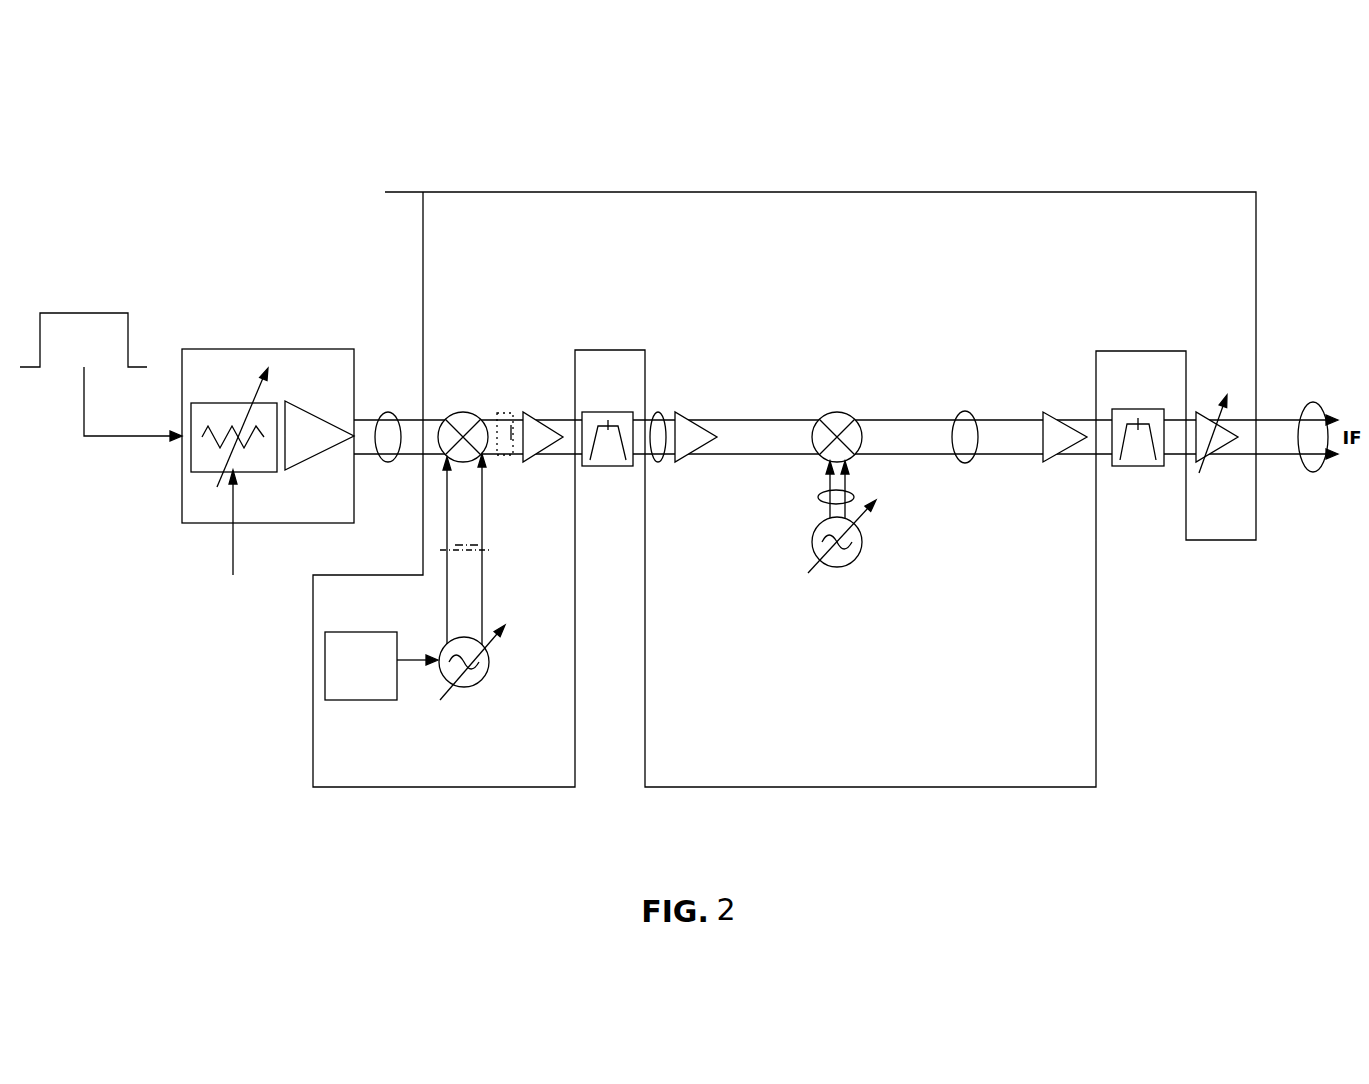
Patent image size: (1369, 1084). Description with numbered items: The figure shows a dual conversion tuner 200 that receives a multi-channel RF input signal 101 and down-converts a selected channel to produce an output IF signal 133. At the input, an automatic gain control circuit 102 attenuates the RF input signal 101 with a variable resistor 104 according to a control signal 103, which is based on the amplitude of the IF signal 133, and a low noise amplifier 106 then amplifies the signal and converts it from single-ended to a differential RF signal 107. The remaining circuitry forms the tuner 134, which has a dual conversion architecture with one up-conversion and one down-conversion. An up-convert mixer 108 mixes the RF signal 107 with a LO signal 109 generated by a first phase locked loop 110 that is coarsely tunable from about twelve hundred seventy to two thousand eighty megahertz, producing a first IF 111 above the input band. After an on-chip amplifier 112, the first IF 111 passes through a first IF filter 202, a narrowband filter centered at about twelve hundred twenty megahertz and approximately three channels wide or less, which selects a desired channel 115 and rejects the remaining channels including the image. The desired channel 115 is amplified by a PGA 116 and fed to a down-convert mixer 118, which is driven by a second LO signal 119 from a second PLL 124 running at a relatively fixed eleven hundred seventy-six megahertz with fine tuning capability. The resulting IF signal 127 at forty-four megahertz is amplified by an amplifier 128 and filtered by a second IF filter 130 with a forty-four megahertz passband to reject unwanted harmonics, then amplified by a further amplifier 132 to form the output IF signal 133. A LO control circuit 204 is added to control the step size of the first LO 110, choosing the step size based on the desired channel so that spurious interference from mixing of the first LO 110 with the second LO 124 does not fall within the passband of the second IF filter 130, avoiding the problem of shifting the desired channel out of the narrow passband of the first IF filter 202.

The RF input signal 101 is at (107, 360).
The automatic gain control circuit 102 is at (285, 344).
The control signal 103 is at (232, 540).
The variable resistor 104 is at (225, 400).
The low noise amplifier 106 is at (306, 401).
The differential RF signal 107 is at (385, 409).
The up-convert mixer 108 is at (475, 411).
The LO signal 109 is at (490, 550).
The first phase locked loop 110 is at (489, 664).
The first IF 111 is at (507, 462).
The amplifier 112 is at (538, 410).
The desired channel 115 is at (661, 465).
The PGA 116 is at (685, 410).
The down-convert mixer 118 is at (841, 410).
The second LO signal 119 is at (856, 494).
The second PLL 124 is at (812, 534).
The IF signal 127 is at (962, 410).
The amplifier 128 is at (1052, 411).
The second IF filter 130 is at (1138, 468).
The amplifier 132 is at (1222, 453).
The IF signal 133 is at (1314, 402).
The tuner 134 is at (452, 191).
The dual conversion tuner 200 is at (1033, 128).
The first IF filter 202 is at (606, 470).
The LO control circuit 204 is at (355, 700).